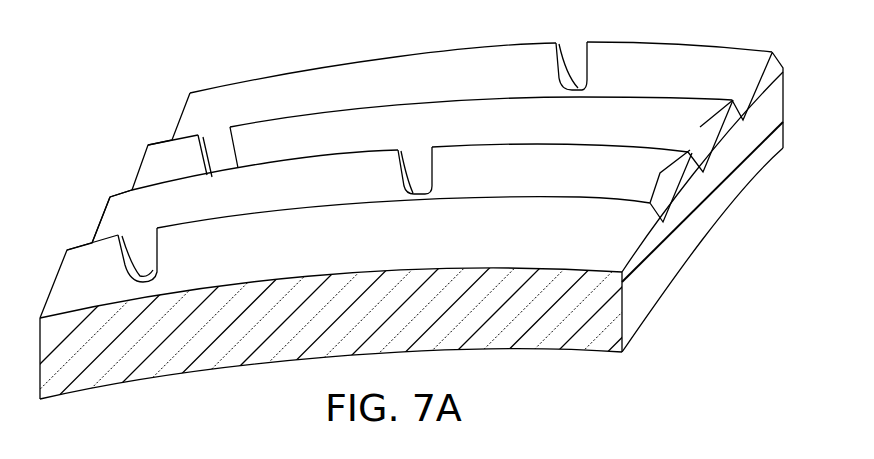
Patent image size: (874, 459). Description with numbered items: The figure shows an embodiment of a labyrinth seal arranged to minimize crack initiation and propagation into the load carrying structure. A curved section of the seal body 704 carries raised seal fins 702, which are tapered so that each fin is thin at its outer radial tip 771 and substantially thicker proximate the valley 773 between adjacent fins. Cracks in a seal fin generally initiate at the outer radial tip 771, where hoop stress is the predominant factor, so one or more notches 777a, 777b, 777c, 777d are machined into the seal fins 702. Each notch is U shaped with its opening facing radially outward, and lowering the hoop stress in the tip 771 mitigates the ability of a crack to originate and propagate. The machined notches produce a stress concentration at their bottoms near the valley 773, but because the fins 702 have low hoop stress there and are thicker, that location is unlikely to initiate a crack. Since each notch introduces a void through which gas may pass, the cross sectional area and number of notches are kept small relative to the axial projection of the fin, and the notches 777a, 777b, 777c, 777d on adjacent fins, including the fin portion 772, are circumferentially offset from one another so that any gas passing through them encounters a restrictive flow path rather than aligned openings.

The seal fin 702 is at (784, 97).
The base substrate 704 is at (703, 220).
The outer radial tip 771 is at (303, 113).
The front block segment 772 is at (678, 155).
The valley 773 is at (784, 147).
The notch 777a is at (143, 260).
The notch 777b is at (425, 171).
The notch 777c is at (222, 150).
The notch 777d is at (578, 68).